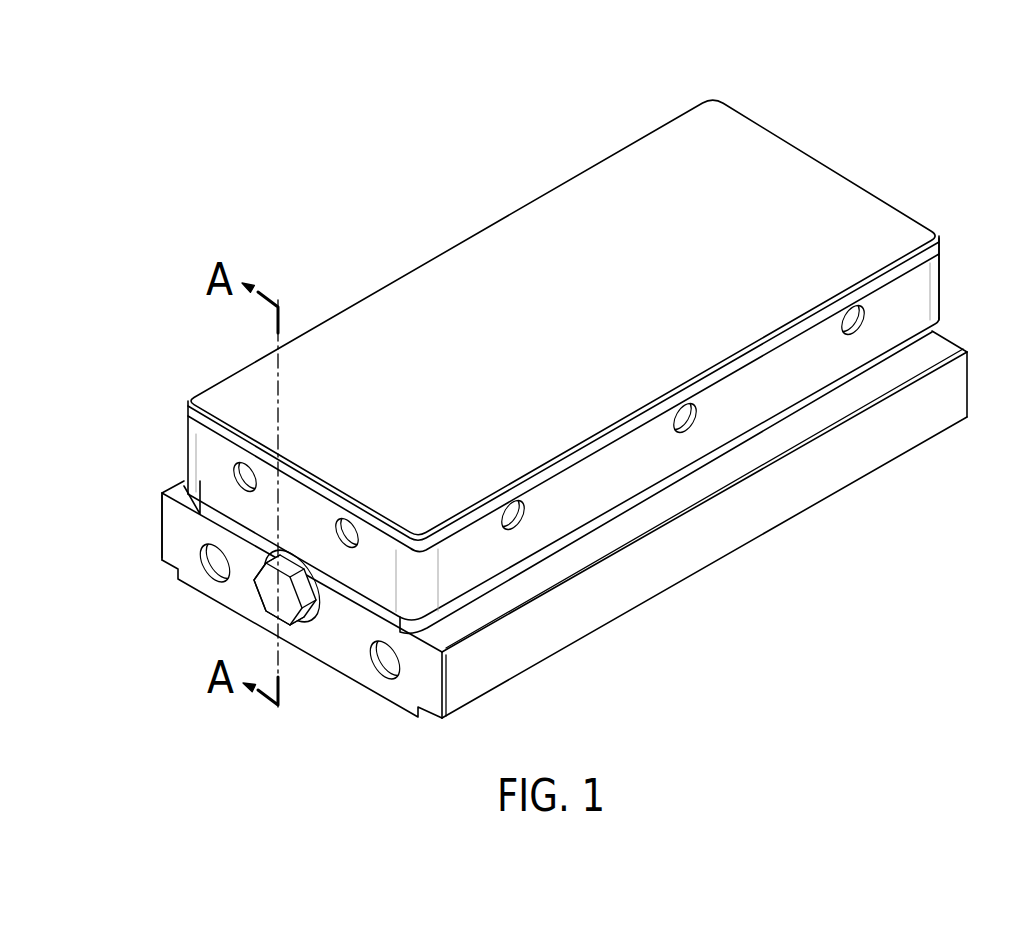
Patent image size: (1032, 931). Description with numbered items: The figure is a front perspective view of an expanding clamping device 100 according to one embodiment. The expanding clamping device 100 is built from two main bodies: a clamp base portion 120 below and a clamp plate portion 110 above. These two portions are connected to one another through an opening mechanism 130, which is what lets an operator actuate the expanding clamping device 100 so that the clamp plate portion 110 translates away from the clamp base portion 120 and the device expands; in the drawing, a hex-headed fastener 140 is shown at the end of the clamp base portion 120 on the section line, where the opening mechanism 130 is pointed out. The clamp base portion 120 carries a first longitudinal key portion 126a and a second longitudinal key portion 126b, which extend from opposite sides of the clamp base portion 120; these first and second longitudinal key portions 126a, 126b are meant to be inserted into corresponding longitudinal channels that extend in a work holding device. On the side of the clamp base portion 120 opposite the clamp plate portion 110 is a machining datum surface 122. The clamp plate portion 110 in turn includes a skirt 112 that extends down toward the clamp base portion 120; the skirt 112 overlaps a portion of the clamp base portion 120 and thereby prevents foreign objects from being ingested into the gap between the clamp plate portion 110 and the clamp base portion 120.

The expanding clamping device 100 is at (543, 392).
The clamp plate portion 110 is at (594, 329).
The skirt 112 is at (940, 283).
The clamp base portion 120 is at (537, 545).
The machining datum surface 122 is at (393, 705).
The first longitudinal key portion 126a is at (480, 680).
The second longitudinal key portion 126b is at (162, 530).
The opening mechanism 130 is at (213, 612).
The bolt 140 is at (262, 596).